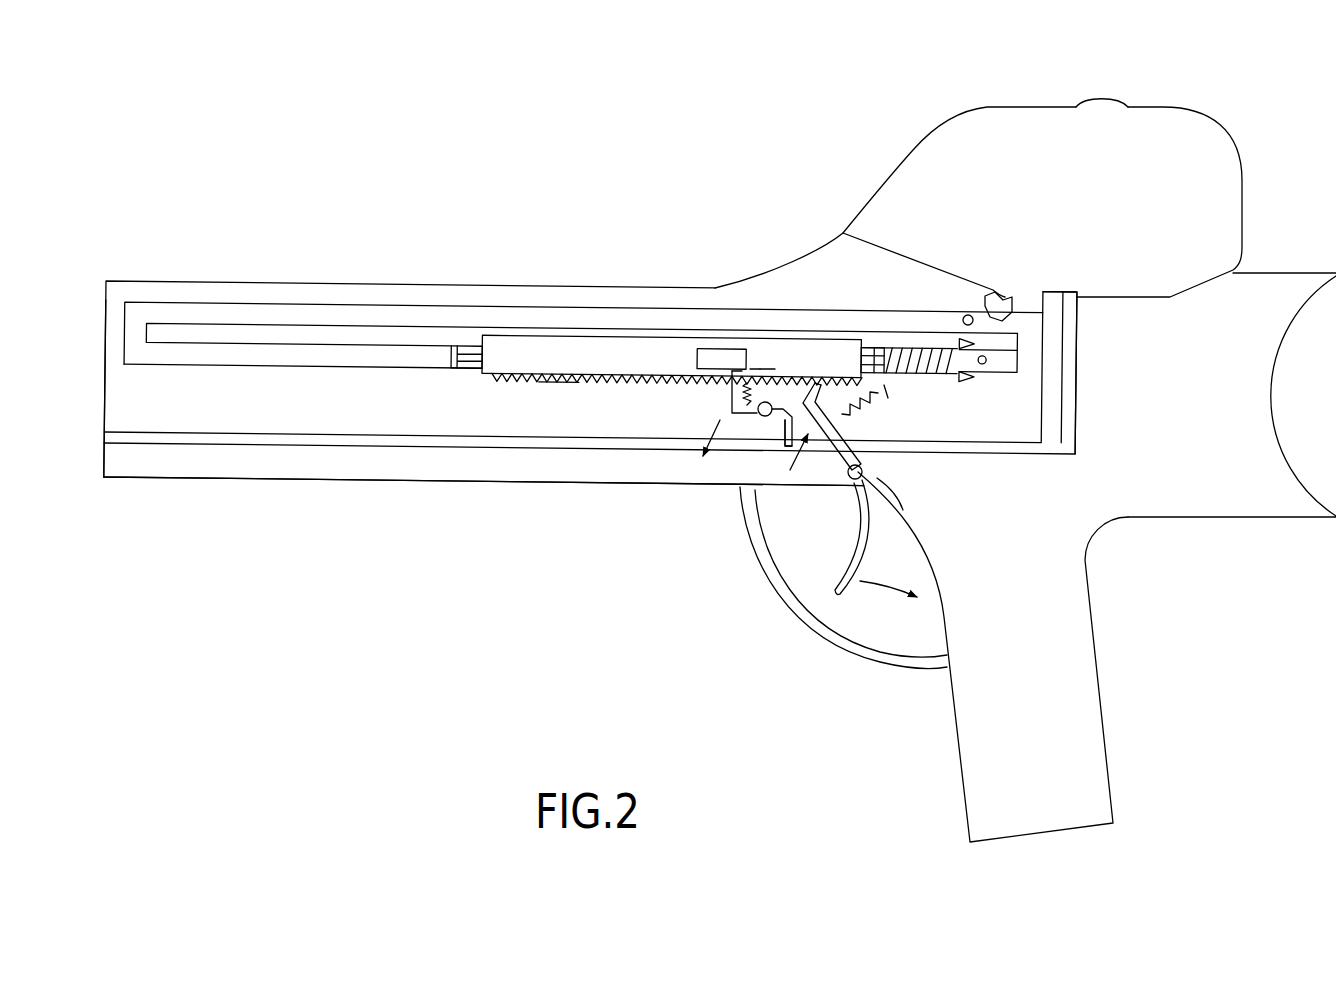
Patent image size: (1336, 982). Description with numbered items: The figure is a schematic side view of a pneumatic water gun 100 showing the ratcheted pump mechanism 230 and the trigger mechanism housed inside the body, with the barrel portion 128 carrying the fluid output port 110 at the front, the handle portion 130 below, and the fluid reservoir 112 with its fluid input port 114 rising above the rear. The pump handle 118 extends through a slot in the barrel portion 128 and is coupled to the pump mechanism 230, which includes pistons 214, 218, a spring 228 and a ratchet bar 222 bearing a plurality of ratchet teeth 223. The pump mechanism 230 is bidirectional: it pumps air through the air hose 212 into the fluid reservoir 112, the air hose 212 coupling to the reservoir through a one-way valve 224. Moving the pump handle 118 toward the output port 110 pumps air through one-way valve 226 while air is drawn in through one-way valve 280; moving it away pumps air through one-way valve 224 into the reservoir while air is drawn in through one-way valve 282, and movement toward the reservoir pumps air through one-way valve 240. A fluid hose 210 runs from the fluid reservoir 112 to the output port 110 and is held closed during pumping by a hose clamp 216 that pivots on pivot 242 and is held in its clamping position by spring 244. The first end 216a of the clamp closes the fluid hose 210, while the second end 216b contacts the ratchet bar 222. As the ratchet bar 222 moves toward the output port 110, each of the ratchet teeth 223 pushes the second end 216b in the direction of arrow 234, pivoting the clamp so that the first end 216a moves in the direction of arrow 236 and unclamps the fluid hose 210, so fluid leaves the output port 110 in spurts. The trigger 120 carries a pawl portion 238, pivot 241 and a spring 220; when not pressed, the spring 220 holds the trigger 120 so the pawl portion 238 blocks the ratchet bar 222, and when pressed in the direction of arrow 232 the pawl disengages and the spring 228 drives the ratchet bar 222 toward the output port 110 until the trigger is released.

The pneumatic water gun 100 is at (720, 150).
The fluid output port 110 is at (104, 438).
The fluid reservoir 112 is at (985, 104).
The fluid input port 114 is at (1120, 98).
The pump handle 118 is at (712, 342).
The trigger 120 is at (809, 584).
The barrel portion 128 is at (172, 281).
The handle portion 130 is at (1087, 710).
The fluid hose 210 is at (210, 444).
The air hose 212 is at (285, 318).
The piston 214 is at (880, 338).
The hose clamp 216 is at (757, 416).
The first end of clamp 216a is at (786, 450).
The second end of clamp 216b is at (730, 392).
The piston 218 is at (452, 362).
The spring 220 is at (862, 425).
The ratchet bar 222 is at (598, 378).
The ratchet teeth 223 is at (560, 382).
The one-way valve 224 is at (1046, 296).
The one-way valve 226 is at (1003, 298).
The spring 228 is at (922, 366).
The pump mechanism 230 is at (655, 331).
The arrow 232 is at (860, 582).
The arrow 234 is at (740, 447).
The arrow 236 is at (790, 470).
The pawl portion 238 is at (806, 392).
The one-way valve 240 is at (990, 358).
The pivot 241 is at (903, 512).
The pivot 242 is at (772, 335).
The spring 244 is at (758, 333).
The one-way valve 280 is at (990, 350).
The one-way valve 282 is at (968, 315).